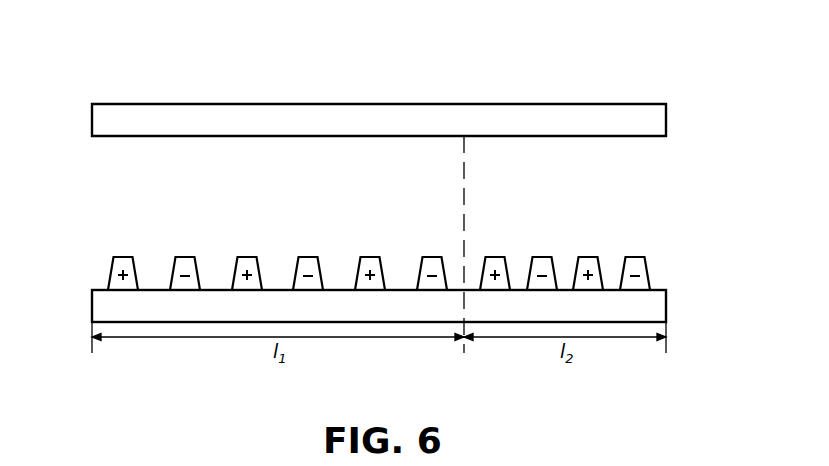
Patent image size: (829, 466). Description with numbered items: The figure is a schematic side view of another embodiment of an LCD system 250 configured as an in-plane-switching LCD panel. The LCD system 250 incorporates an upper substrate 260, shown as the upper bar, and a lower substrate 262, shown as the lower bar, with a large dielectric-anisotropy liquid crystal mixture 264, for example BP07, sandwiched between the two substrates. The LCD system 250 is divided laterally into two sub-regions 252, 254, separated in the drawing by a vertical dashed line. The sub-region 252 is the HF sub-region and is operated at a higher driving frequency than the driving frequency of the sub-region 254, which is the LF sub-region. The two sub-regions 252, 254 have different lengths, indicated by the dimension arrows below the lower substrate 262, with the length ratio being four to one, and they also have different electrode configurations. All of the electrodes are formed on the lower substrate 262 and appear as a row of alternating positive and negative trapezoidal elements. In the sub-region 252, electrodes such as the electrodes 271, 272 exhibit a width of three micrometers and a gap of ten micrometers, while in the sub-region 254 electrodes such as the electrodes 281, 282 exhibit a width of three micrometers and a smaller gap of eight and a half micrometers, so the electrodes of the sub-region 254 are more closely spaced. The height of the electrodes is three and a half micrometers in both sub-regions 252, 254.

The LCD system 250 is at (700, 100).
The sub-region 252 is at (238, 88).
The sub-region 254 is at (503, 88).
The upper substrate 260 is at (91, 118).
The lower substrate 262 is at (91, 307).
The large Δε LC mixture 264 is at (645, 212).
The electrode 271 is at (246, 256).
The electrode 272 is at (309, 256).
The electrode 281 is at (495, 256).
The electrode 282 is at (541, 256).